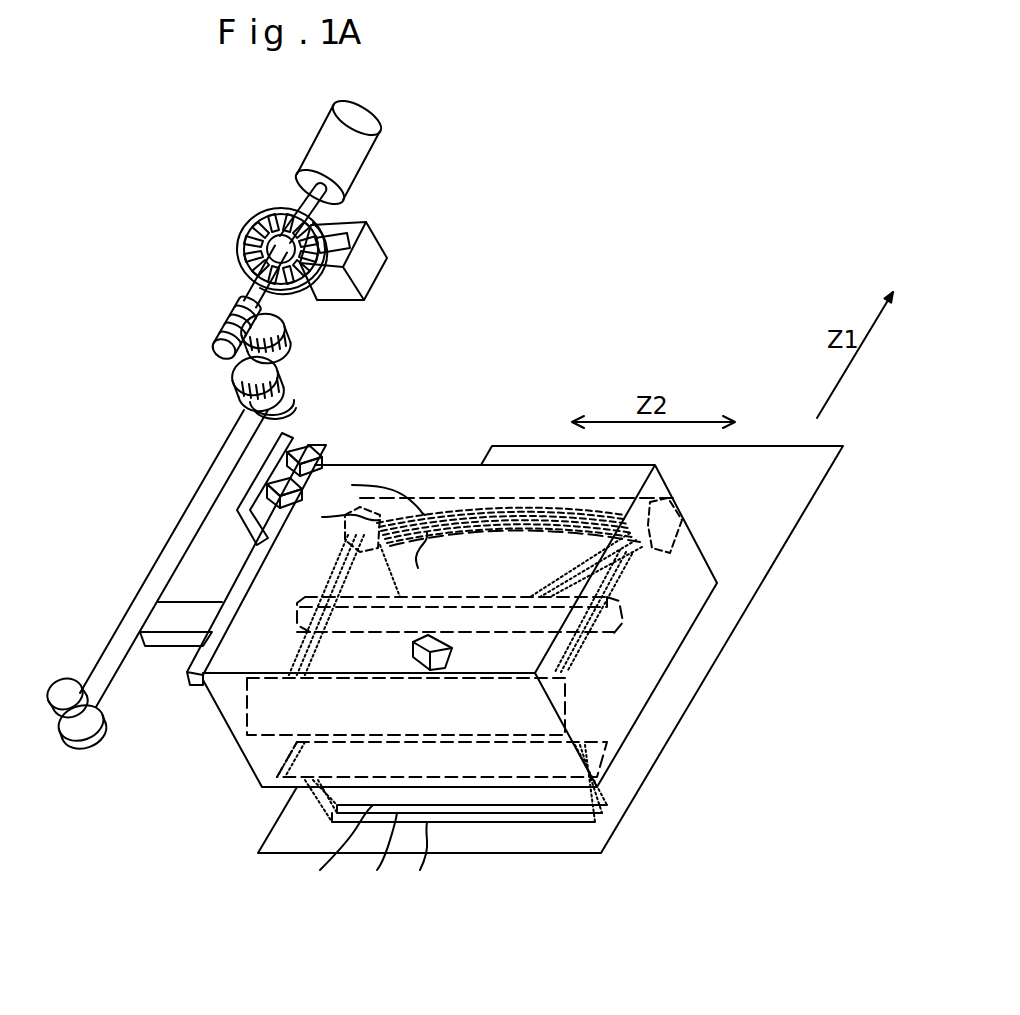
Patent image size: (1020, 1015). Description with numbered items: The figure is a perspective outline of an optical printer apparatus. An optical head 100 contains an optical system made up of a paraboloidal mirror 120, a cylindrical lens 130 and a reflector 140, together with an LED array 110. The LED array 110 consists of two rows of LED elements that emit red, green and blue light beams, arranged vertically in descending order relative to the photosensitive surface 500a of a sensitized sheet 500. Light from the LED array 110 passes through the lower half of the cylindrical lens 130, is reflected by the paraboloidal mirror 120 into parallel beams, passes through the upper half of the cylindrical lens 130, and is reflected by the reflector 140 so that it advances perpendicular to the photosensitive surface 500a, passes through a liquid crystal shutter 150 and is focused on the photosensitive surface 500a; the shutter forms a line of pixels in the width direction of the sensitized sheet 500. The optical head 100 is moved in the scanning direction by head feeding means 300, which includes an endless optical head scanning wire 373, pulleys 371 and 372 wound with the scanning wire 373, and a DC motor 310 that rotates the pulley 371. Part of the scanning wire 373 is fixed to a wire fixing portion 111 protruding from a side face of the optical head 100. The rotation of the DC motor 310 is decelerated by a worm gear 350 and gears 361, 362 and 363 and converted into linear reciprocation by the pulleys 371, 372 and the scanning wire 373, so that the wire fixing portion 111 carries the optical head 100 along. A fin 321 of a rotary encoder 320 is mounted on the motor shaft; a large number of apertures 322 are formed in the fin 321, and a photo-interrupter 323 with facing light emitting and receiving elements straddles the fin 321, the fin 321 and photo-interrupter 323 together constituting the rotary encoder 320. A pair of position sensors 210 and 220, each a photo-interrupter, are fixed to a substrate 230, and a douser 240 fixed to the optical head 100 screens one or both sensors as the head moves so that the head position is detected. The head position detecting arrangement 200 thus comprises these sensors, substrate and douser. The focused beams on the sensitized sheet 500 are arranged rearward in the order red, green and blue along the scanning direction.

The optical head 100 is at (667, 483).
The LED array 110 is at (453, 662).
The wire fixing portion 111 is at (173, 640).
The paraboloidal mirror 120 is at (668, 542).
The cylindrical lens 130 is at (625, 615).
The reflector 140 is at (567, 697).
The liquid crystal shutter 150 is at (607, 767).
The moving mechanism 200 is at (275, 516).
The position sensor 210 is at (267, 483).
The position sensor 220 is at (318, 453).
The substrate 230 is at (240, 527).
The douser 240 is at (237, 593).
The head feeding means 300 is at (273, 421).
The DC motor 310 is at (363, 147).
The rotary encoder 320 is at (310, 249).
The fin 321 is at (245, 255).
The apertures 322 is at (243, 228).
The photo-interrupter 323 is at (372, 260).
The worm gear 350 is at (214, 322).
The gear 361 is at (292, 333).
The gear 362 is at (290, 367).
The gear 363 is at (228, 387).
The pulley 371 is at (288, 402).
The pulley 372 is at (62, 687).
The optical head scanning wire 373 is at (167, 545).
The sensitized sheet 500 is at (513, 854).
The photosensitive surface 500a is at (580, 836).